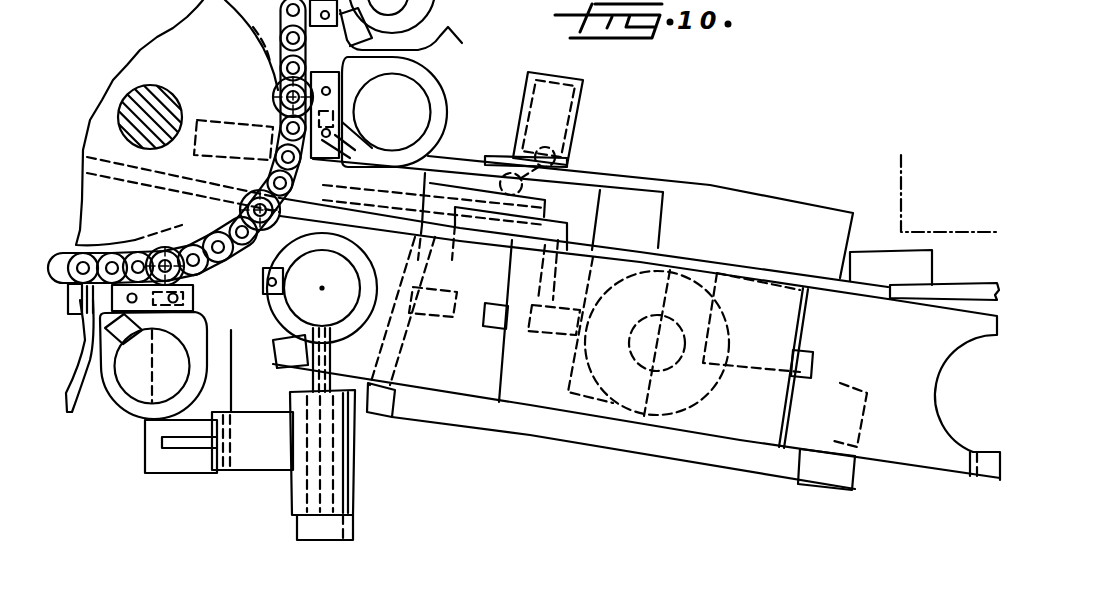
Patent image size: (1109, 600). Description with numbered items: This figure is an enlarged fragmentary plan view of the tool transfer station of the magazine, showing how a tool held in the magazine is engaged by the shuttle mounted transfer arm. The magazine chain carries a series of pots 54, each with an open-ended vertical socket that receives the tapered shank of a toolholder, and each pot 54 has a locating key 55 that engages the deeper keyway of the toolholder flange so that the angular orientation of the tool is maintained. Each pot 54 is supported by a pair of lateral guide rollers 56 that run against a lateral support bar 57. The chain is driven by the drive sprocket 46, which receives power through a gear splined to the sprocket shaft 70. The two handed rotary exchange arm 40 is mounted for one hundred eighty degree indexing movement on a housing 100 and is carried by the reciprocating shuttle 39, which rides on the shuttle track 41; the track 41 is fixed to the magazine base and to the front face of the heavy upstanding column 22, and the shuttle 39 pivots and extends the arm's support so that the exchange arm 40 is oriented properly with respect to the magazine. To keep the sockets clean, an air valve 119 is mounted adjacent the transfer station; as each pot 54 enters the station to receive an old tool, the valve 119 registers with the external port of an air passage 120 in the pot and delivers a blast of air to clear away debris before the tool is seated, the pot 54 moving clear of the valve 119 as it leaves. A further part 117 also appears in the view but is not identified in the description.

The column 22 is at (900, 208).
The shuttle 39 is at (605, 451).
The exchange arm 40 is at (695, 423).
The shuttle track 41 is at (960, 287).
The drive sprocket 46 is at (207, 23).
The pot 54 is at (452, 38).
The locating key 55 is at (354, 136).
The lateral guide rollers 56 is at (228, 229).
The lateral support bar 57 is at (218, 289).
The sprocket shaft 70 is at (160, 100).
The housing 100 is at (488, 423).
The rod 117 is at (312, 383).
The air valve 119 is at (295, 498).
The air passage 120 is at (330, 350).